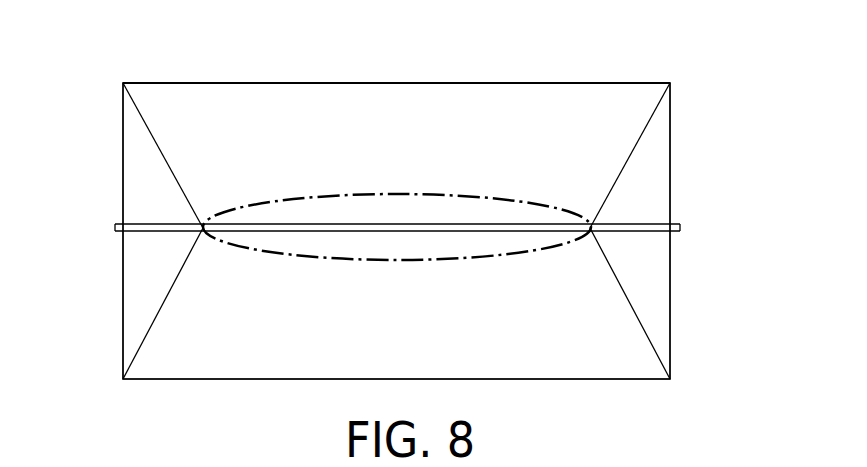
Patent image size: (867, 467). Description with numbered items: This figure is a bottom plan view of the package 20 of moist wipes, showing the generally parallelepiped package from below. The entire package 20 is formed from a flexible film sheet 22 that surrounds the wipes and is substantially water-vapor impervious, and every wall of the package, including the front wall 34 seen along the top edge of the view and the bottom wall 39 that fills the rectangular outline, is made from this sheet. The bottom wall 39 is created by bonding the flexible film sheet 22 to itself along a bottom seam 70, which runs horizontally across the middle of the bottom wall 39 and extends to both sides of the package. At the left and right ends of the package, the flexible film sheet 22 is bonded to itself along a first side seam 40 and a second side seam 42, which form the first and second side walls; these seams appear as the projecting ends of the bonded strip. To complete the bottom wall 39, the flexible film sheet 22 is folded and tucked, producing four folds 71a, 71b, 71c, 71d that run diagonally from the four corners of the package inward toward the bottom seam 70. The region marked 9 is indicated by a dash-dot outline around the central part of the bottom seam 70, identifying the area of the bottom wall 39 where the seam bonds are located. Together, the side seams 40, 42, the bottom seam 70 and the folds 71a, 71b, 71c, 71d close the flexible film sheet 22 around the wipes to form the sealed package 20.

The package 20 is at (637, 36).
The flexible film sheet 22 is at (650, 165).
The front wall 34 is at (343, 82).
The bottom wall 39 is at (508, 108).
The first side seam 40 is at (115, 227).
The second side seam 42 is at (680, 227).
The bottom seam 70 is at (433, 232).
The opening region 9 is at (350, 262).
The fold 71a is at (168, 160).
The fold 71b is at (165, 303).
The fold 71c is at (627, 162).
The fold 71d is at (620, 290).